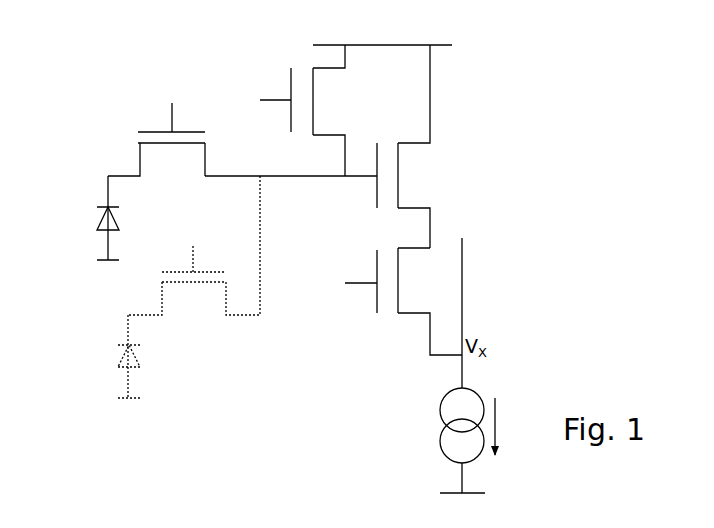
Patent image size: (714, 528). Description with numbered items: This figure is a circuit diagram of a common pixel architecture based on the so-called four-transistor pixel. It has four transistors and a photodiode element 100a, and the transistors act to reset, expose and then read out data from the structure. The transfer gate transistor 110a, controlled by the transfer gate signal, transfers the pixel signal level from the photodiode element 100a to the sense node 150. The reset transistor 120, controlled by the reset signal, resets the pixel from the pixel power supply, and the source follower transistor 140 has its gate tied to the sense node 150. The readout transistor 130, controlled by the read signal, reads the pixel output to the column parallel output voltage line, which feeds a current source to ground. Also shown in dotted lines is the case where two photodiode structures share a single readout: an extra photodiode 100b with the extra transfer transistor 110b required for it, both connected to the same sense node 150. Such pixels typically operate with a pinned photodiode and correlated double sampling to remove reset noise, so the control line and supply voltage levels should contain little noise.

The photodiode element 100a is at (86, 243).
The extra photodiode 100b is at (108, 380).
The transfer gate transistor 110a is at (128, 132).
The extra transfer transistor 110b is at (213, 325).
The reset transistor 120 is at (278, 67).
The readout transistor 130 is at (385, 325).
The source follower transistor 140 is at (445, 162).
The sense node 150 is at (330, 176).